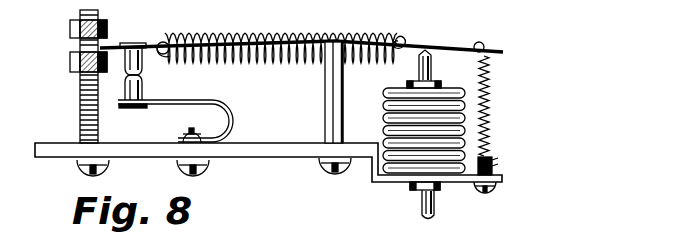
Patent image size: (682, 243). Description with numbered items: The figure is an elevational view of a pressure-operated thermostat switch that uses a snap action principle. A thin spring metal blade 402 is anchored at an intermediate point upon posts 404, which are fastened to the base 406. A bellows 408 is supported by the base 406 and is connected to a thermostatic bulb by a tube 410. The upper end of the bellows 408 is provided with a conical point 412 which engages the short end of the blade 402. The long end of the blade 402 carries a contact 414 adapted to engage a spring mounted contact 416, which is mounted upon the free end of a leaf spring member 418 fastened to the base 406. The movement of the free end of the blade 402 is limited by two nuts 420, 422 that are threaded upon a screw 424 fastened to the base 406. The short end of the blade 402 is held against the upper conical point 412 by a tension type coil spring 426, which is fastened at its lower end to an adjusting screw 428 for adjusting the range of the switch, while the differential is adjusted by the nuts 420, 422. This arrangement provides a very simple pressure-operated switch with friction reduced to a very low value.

The spring metal blade 402 is at (404, 44).
The posts 404 is at (339, 40).
The base 406 is at (278, 152).
The bellows 408 is at (388, 129).
The tube 410 is at (436, 204).
The conical point 412 is at (432, 68).
The contact 414 is at (144, 66).
The spring mounted contact 416 is at (144, 86).
The leaf spring member 418 is at (158, 104).
The nut 420 is at (70, 29).
The nut 422 is at (70, 61).
The screw 424 is at (82, 116).
The tension type coil spring 426 is at (488, 94).
The adjusting screw 428 is at (492, 186).